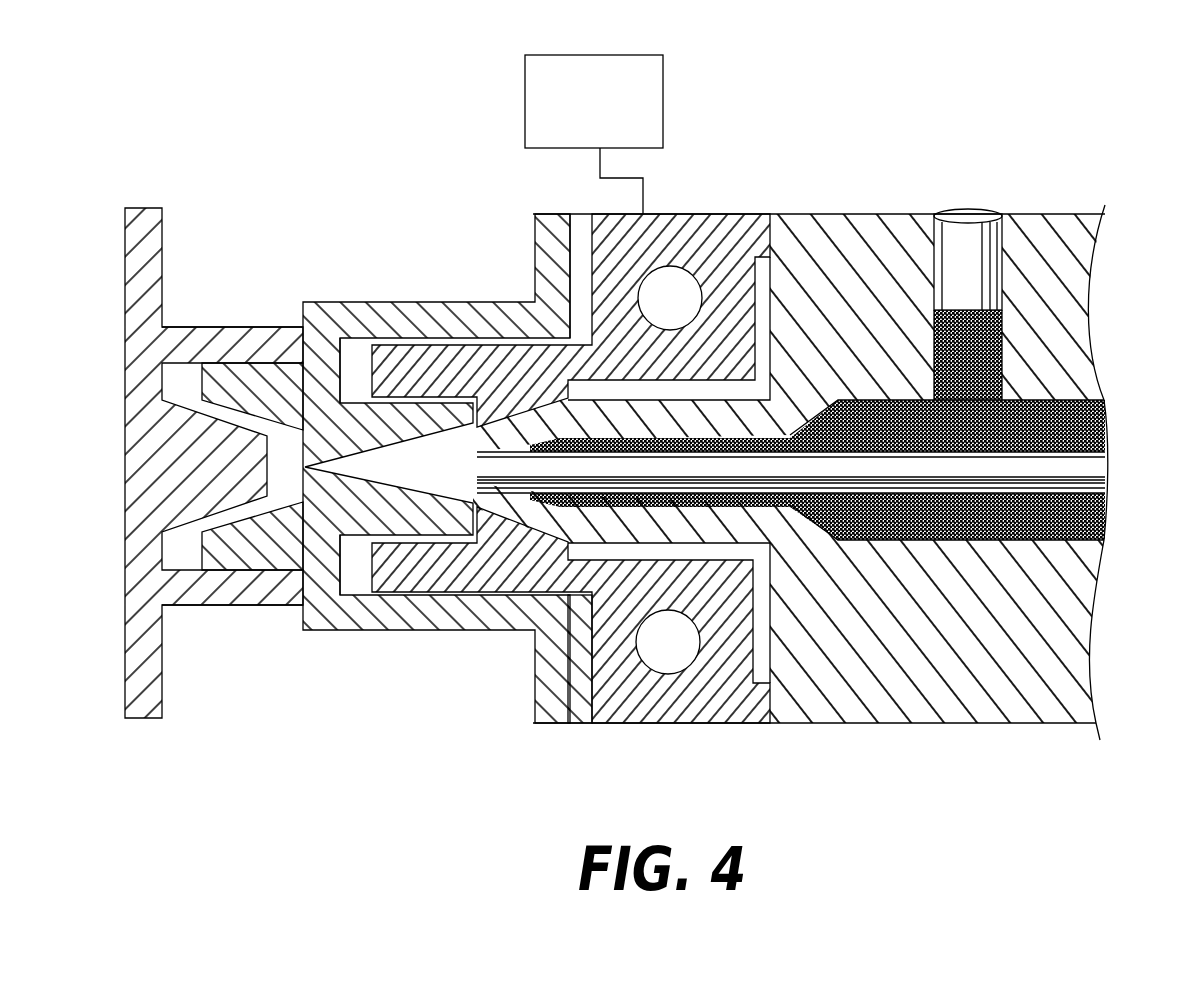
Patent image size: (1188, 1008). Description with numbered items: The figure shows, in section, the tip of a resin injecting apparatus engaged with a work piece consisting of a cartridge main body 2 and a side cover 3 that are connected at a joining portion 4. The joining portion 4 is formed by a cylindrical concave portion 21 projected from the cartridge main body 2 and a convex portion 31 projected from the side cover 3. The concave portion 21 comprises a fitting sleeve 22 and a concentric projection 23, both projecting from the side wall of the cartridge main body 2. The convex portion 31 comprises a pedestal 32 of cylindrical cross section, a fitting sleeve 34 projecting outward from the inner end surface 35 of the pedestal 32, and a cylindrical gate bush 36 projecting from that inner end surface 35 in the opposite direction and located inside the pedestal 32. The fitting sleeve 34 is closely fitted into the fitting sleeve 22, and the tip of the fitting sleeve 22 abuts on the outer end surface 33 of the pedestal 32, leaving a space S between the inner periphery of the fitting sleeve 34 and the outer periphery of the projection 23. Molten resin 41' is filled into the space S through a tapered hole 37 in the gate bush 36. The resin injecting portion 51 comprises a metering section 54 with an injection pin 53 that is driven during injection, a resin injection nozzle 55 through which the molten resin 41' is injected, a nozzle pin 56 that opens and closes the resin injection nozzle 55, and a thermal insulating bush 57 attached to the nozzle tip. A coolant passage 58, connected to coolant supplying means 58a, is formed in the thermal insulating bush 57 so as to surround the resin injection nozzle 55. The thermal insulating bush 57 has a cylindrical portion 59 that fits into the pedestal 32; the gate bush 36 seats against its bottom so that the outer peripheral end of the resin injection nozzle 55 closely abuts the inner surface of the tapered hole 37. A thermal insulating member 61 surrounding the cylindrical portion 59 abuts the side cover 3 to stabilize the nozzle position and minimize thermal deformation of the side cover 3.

The cartridge main body 2 is at (136, 672).
The side cover 3 is at (530, 685).
The joining portion 4 is at (348, 195).
The concave portion 21 is at (232, 672).
The fitting sleeve 22 is at (225, 342).
The projection 23 is at (249, 483).
The convex portion 31 is at (405, 705).
The pedestal 32 is at (472, 318).
The outer end surface 33 is at (296, 340).
The fitting sleeve 34 is at (217, 557).
The inner end surface 35 is at (345, 575).
The gate bush 36 is at (422, 533).
The tapered hole 37 is at (366, 455).
The molten resin 41' is at (835, 469).
The resin injecting portion 51 is at (830, 142).
The injection pin 53 is at (962, 225).
The metering section 54 is at (1068, 328).
The resin injection nozzle 55 is at (615, 398).
The nozzle pin 56 is at (1000, 463).
The thermal insulating bush 57 is at (735, 700).
The coolant passage 58 is at (676, 290).
The coolant supplying means 58a is at (663, 108).
The cylindrical portion 59 is at (406, 365).
The thermal insulating member 61 is at (578, 703).
The space S is at (182, 372).